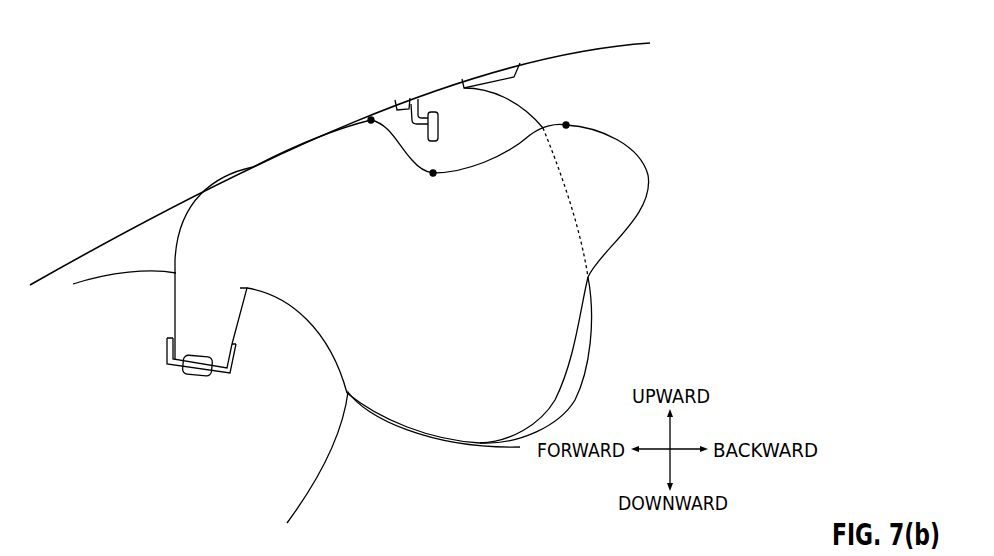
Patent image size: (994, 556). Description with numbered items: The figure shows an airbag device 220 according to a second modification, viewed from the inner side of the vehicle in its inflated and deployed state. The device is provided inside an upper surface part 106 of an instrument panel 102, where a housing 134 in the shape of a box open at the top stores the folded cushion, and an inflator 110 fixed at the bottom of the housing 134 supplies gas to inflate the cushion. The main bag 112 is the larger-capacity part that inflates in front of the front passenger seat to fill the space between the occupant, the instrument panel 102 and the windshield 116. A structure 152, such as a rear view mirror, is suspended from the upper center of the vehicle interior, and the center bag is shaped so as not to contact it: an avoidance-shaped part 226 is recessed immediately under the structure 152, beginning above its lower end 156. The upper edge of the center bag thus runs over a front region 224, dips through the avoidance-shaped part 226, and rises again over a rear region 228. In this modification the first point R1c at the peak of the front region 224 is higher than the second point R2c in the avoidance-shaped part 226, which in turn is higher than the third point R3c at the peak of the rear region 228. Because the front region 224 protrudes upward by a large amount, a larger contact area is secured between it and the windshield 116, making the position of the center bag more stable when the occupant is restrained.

The instrument panel 102 is at (323, 478).
The upper surface part 106 is at (258, 283).
The inflator 110 is at (197, 377).
The main bag 112 is at (527, 103).
The windshield 116 is at (95, 248).
The housing 134 is at (233, 358).
The structure 152 is at (430, 112).
The lower end 156 is at (437, 144).
The airbag device 220 is at (420, 240).
The front region 224 is at (340, 147).
The avoidance-shaped part 226 is at (474, 163).
The rear region 228 is at (600, 137).
The first point R1c is at (370, 119).
The second point R2c is at (434, 175).
The third point R3c is at (567, 124).